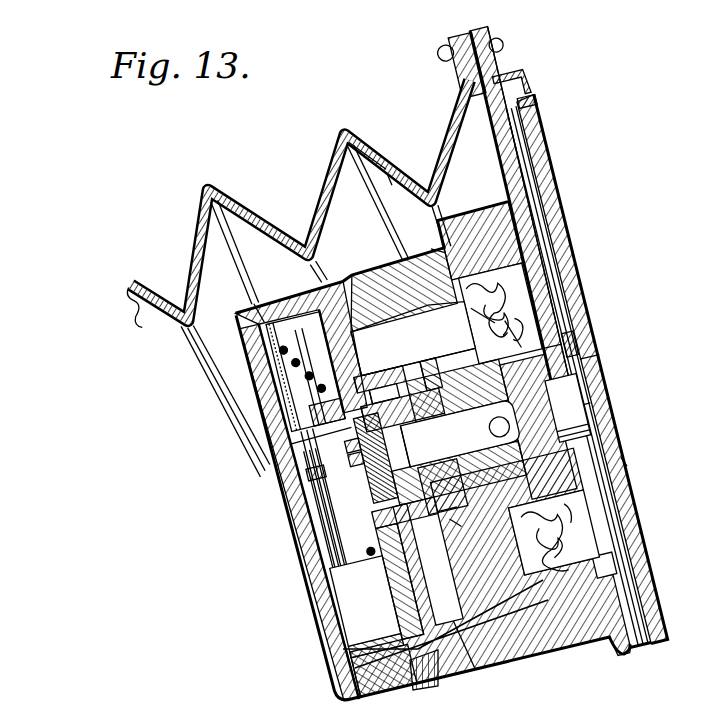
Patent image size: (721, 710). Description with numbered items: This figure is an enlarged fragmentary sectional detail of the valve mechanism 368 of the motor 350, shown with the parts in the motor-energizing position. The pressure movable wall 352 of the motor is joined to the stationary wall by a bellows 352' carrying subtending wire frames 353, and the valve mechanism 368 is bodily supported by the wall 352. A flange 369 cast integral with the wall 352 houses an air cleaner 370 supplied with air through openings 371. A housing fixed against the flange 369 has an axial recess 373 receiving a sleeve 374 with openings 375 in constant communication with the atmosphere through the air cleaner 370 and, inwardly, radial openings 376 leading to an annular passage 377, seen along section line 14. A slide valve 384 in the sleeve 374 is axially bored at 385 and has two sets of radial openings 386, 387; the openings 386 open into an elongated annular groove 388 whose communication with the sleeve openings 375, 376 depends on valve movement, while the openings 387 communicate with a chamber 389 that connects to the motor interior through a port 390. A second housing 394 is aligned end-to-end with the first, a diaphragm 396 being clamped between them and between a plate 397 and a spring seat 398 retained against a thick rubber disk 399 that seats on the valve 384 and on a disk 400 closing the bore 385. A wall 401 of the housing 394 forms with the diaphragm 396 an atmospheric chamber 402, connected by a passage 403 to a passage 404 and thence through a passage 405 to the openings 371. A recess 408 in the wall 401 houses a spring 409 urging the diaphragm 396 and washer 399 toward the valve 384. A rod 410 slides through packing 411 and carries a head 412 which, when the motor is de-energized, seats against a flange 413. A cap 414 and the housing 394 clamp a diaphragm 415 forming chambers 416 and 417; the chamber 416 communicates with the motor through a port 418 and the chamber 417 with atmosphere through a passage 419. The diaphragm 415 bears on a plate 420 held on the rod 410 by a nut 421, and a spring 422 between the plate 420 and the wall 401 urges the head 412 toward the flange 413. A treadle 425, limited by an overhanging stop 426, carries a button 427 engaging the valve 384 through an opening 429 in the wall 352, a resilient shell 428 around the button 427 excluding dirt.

The section line 14 is at (406, 211).
The motor 350 is at (219, 181).
The pressure movable wall 352 is at (591, 367).
The bellows 352' is at (375, 138).
The subtending wire frames 353 is at (340, 165).
The valve mechanism 368 is at (314, 670).
The flange 369 is at (480, 236).
The air cleaner 370 is at (505, 268).
The openings 371 is at (427, 240).
The axial recess 373 is at (447, 515).
The sleeve 374 is at (550, 327).
The openings 375 is at (502, 360).
The radial openings 376 is at (413, 357).
The annular passage 377 is at (487, 312).
The slide valve 384 is at (537, 397).
The axial bore 385 is at (424, 448).
The radial openings 386 is at (482, 434).
The radial openings 387 is at (434, 444).
The elongated annular groove 388 is at (520, 500).
The chamber 389 is at (418, 327).
The port 390 is at (355, 268).
The housing 394 is at (290, 283).
The diaphragm 396 is at (340, 327).
The plate 397 is at (347, 360).
The spring seat 398 is at (350, 377).
The thick rubber disk 399 is at (367, 410).
The disk 400 is at (432, 508).
The wall 401 is at (387, 590).
The atmospheric chamber 402 is at (390, 552).
The passage 403 is at (400, 587).
The passage 404 is at (403, 650).
The passage 405 is at (447, 640).
The recess 408 is at (310, 538).
The spring 409 is at (310, 548).
The rod 410 is at (303, 505).
The packing 411 is at (352, 453).
The head 412 is at (349, 466).
The flange 413 is at (277, 436).
The cap 414 is at (257, 347).
The diaphragm 415 is at (247, 322).
The chamber 416 is at (308, 333).
The chamber 417 is at (257, 362).
The port 418 is at (268, 285).
The passage 419 is at (337, 650).
The plate 420 is at (287, 380).
The nut 421 is at (283, 470).
The spring 422 is at (333, 593).
The treadle 425 is at (631, 448).
The overhanging stop 426 is at (520, 62).
The button 427 is at (583, 397).
The resilient shell 428 is at (582, 332).
The opening 429 is at (597, 345).